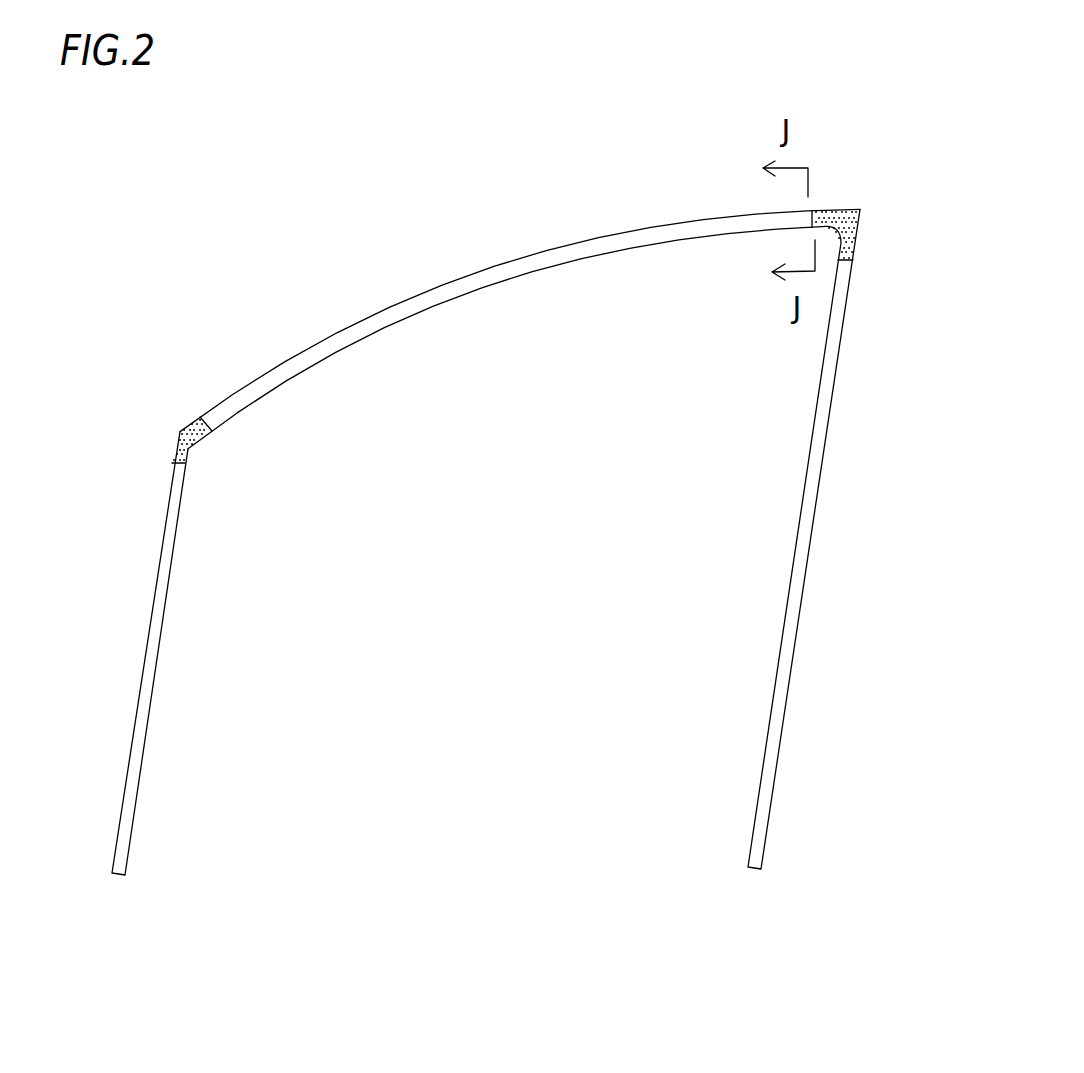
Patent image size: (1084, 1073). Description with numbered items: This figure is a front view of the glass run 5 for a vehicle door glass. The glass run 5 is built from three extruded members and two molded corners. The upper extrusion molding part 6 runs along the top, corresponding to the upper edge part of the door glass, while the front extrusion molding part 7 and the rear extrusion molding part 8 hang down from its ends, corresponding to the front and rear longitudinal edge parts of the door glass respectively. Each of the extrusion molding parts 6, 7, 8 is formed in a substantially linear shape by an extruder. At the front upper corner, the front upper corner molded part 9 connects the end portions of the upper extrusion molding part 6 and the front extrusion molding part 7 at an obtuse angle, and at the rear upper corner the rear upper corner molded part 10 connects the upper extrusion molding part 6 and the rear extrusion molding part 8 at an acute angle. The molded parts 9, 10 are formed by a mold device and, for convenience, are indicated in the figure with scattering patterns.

The glass run 5 is at (670, 186).
The upper extrusion molding part 6 is at (473, 272).
The front extrusion molding part 7 is at (148, 632).
The rear extrusion molding part 8 is at (825, 437).
The front upper corner molded part 9 is at (182, 428).
The rear upper corner molded part 10 is at (857, 223).